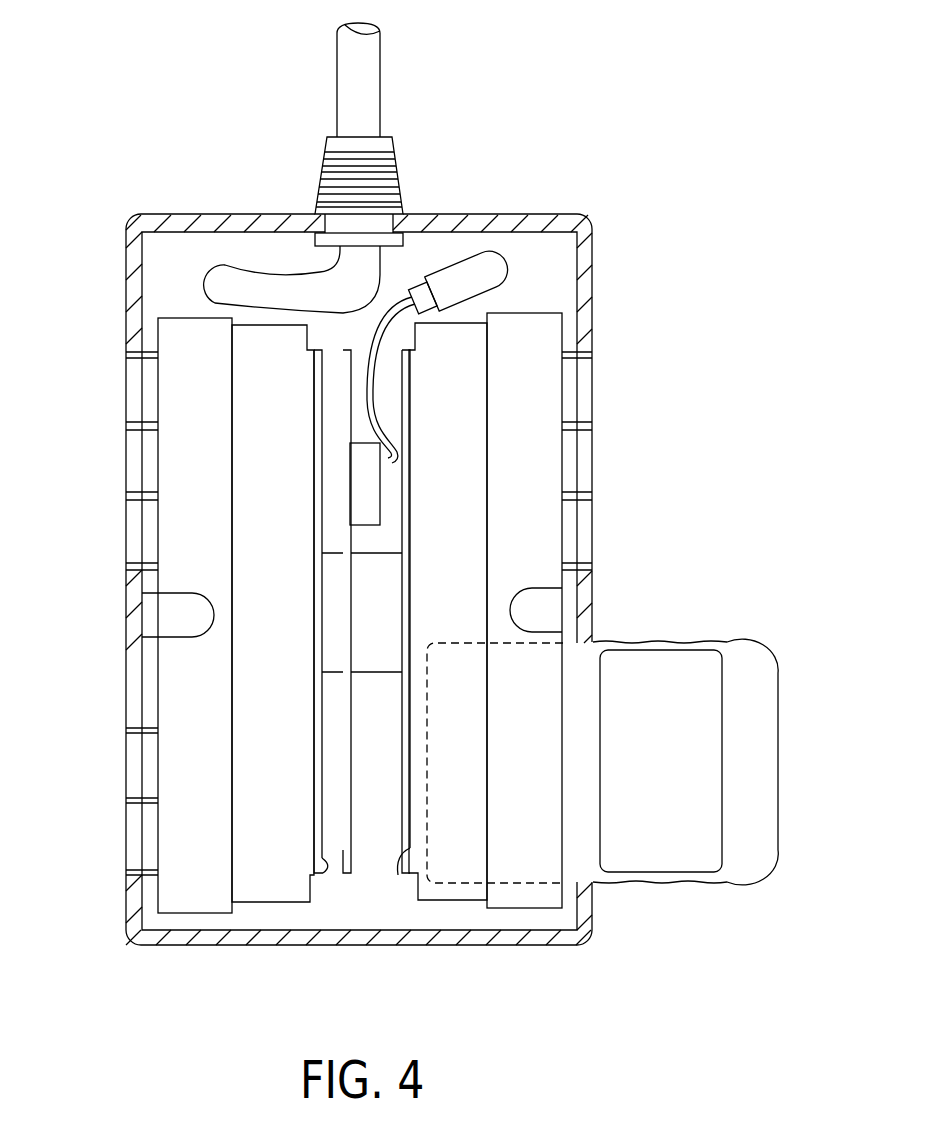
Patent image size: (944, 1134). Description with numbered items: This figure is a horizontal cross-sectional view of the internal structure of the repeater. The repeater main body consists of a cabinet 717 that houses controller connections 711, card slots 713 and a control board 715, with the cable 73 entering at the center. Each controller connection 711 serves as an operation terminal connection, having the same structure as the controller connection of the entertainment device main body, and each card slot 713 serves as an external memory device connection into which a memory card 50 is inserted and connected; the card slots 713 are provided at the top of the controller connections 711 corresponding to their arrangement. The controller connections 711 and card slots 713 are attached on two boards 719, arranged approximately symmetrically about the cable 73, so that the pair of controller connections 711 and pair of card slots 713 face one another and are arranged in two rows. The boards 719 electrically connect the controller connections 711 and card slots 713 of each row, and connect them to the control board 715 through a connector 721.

The memory card 50 is at (762, 762).
The cable 73 is at (365, 105).
The controller connection 711 is at (140, 462).
The card slot 713 is at (180, 397).
The control board 715 is at (343, 850).
The cabinet 717 is at (593, 283).
The board 719 is at (328, 862).
The connector 721 is at (333, 637).